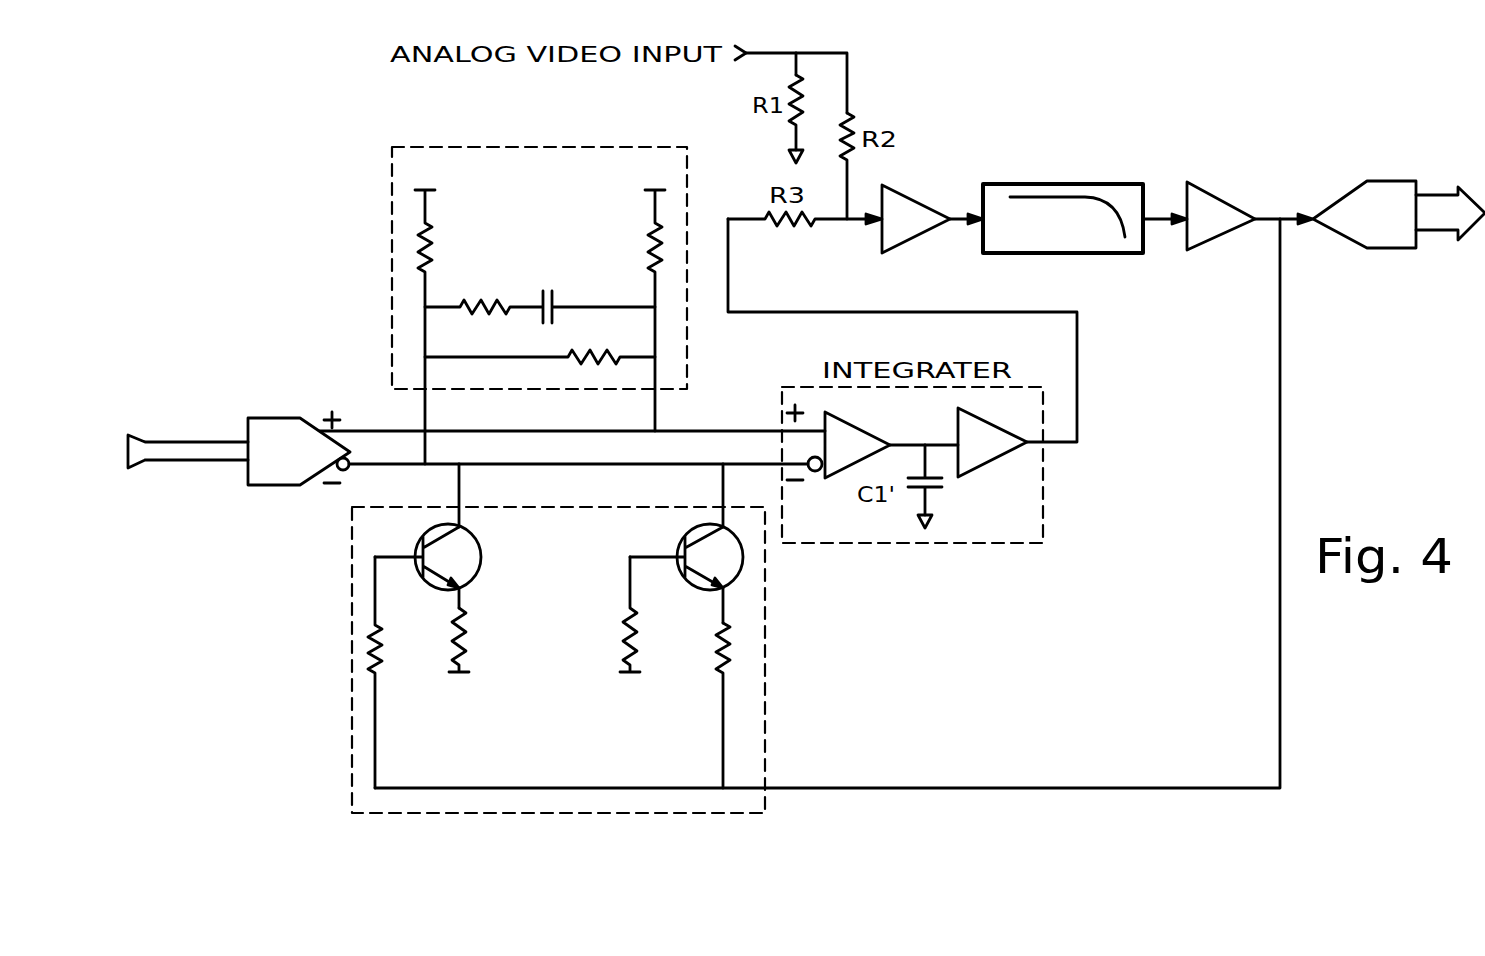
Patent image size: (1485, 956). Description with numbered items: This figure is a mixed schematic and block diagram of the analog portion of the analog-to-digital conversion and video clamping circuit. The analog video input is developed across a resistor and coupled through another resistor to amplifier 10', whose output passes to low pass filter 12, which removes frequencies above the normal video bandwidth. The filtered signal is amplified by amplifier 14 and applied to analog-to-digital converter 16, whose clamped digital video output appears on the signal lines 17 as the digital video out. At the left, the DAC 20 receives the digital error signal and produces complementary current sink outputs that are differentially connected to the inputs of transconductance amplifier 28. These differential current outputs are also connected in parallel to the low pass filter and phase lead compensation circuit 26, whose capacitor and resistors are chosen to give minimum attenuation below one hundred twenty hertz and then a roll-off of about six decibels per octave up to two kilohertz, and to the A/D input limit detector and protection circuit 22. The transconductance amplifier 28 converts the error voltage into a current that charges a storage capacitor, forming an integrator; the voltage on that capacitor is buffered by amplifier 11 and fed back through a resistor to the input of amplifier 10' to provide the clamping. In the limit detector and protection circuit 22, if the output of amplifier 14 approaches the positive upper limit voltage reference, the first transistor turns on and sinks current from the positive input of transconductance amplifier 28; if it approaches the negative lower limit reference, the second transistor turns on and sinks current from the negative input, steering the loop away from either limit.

The amplifier 10' is at (925, 199).
The amplifier 11 is at (1000, 461).
The low pass filter 12 is at (1048, 184).
The amplifier 14 is at (1233, 203).
The analog-to-digital converter 16 is at (1383, 250).
The signal lines 17 is at (1445, 236).
The digital-to-analog converter 20 is at (302, 490).
The A/D input limit detector and protection circuit 22 is at (770, 626).
The low pass filter and phase lead compensation circuit 26 is at (388, 234).
The transconductance amplifier 28 is at (850, 422).